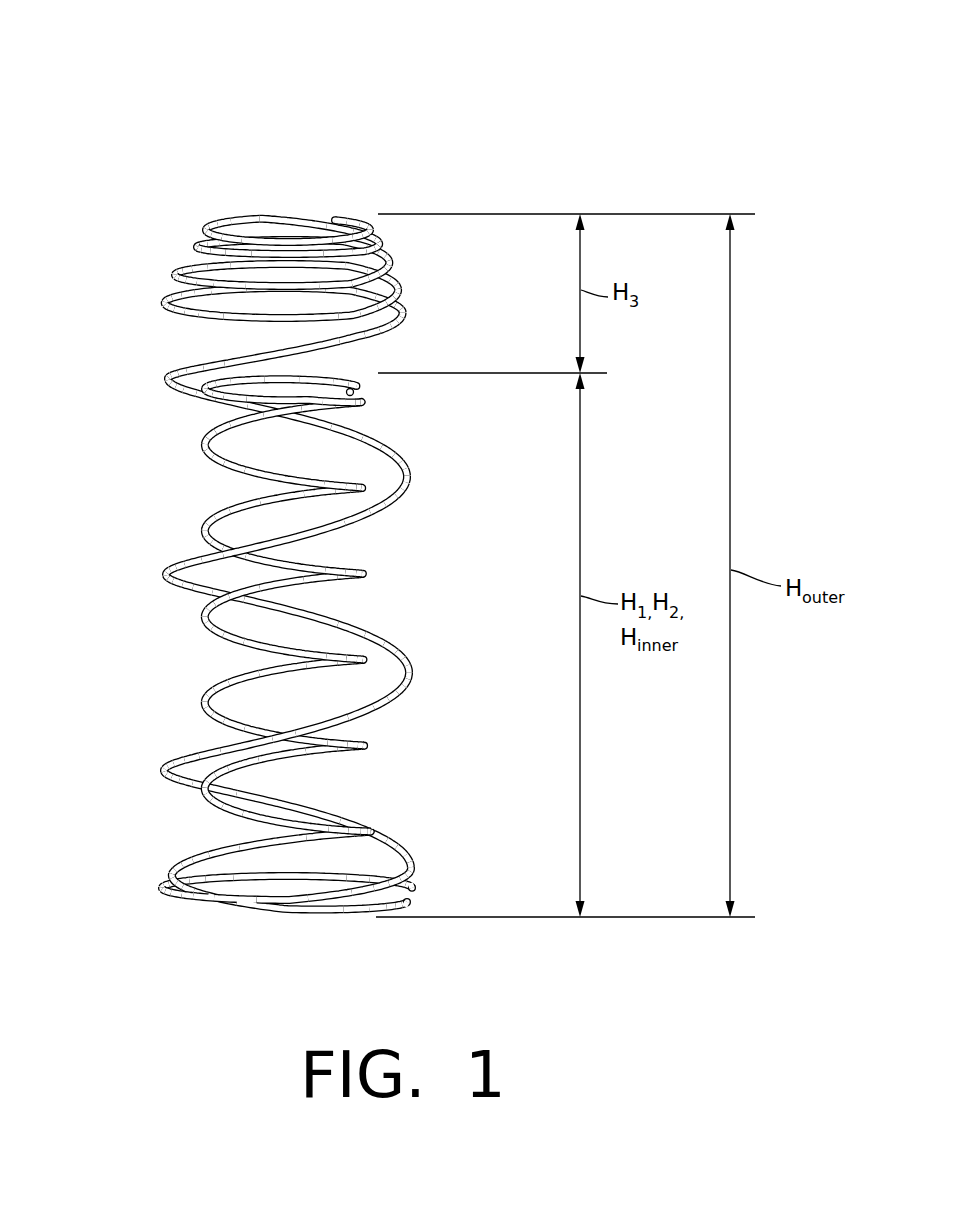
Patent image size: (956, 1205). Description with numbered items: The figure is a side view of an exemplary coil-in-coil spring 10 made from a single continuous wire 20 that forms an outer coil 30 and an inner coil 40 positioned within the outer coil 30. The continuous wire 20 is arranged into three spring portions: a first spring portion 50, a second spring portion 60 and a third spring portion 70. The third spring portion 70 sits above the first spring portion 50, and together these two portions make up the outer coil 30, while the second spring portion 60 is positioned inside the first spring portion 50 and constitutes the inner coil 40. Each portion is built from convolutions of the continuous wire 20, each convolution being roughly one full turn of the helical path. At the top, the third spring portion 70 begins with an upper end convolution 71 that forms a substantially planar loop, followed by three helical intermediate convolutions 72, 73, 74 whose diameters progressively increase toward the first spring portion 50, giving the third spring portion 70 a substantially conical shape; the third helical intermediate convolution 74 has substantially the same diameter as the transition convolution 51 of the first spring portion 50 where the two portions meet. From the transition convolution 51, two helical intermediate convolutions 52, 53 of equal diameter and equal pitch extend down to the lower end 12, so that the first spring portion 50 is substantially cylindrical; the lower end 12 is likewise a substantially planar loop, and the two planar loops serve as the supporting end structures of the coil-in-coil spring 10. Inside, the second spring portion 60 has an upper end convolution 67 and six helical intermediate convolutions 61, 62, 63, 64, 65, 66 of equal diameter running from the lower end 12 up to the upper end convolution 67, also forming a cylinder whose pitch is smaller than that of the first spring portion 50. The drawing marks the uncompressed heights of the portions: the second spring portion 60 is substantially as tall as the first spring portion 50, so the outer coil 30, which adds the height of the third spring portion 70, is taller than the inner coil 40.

The coil-in-coil spring 10 is at (98, 112).
The lower end 12 is at (397, 898).
The continuous wire 20 is at (338, 217).
The outer coil 30 is at (392, 456).
The inner coil 40 is at (372, 487).
The first spring portion 50 is at (409, 673).
The transition convolution 51 is at (180, 378).
The helical intermediate convolution 52 is at (170, 576).
The helical intermediate convolution 53 is at (170, 770).
The second spring portion 60 is at (368, 572).
The helical intermediate convolution 61 is at (228, 870).
The helical intermediate convolution 62 is at (198, 785).
The helical intermediate convolution 63 is at (206, 705).
The helical intermediate convolution 64 is at (204, 622).
The helical intermediate convolution 65 is at (204, 530).
The helical intermediate convolution 66 is at (205, 455).
The upper end convolution 67 is at (206, 394).
The third spring portion 70 is at (388, 256).
The upper end convolution 71 is at (204, 228).
The first helical intermediate convolution 72 is at (193, 244).
The second helical intermediate convolution 73 is at (178, 272).
The third helical intermediate convolution 74 is at (168, 302).